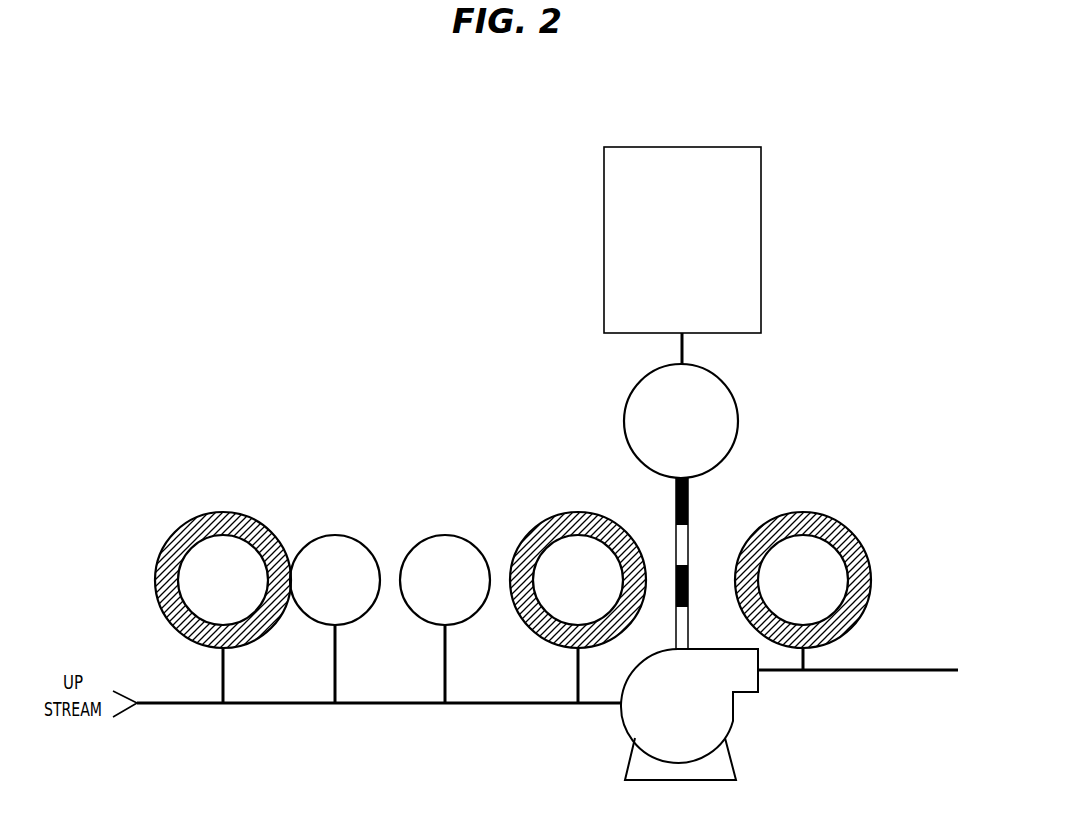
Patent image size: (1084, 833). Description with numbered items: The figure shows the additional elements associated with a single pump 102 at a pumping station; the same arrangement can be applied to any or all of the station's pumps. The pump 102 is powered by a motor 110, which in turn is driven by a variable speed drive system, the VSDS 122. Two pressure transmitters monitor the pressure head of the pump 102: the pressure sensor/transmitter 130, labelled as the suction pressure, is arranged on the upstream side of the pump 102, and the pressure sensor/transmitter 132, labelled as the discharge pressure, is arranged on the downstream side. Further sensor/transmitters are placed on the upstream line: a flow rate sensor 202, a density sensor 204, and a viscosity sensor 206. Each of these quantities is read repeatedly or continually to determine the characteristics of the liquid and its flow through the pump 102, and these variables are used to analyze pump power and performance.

The pump 102 is at (739, 720).
The motor 110 is at (739, 430).
The VSDS 122 is at (763, 235).
The pressure sensor/transmitter 130 is at (559, 515).
The pressure sensor/transmitter 132 is at (860, 578).
The flow rate sensor 202 is at (201, 514).
The density sensor 204 is at (318, 535).
The viscosity sensor 206 is at (443, 535).